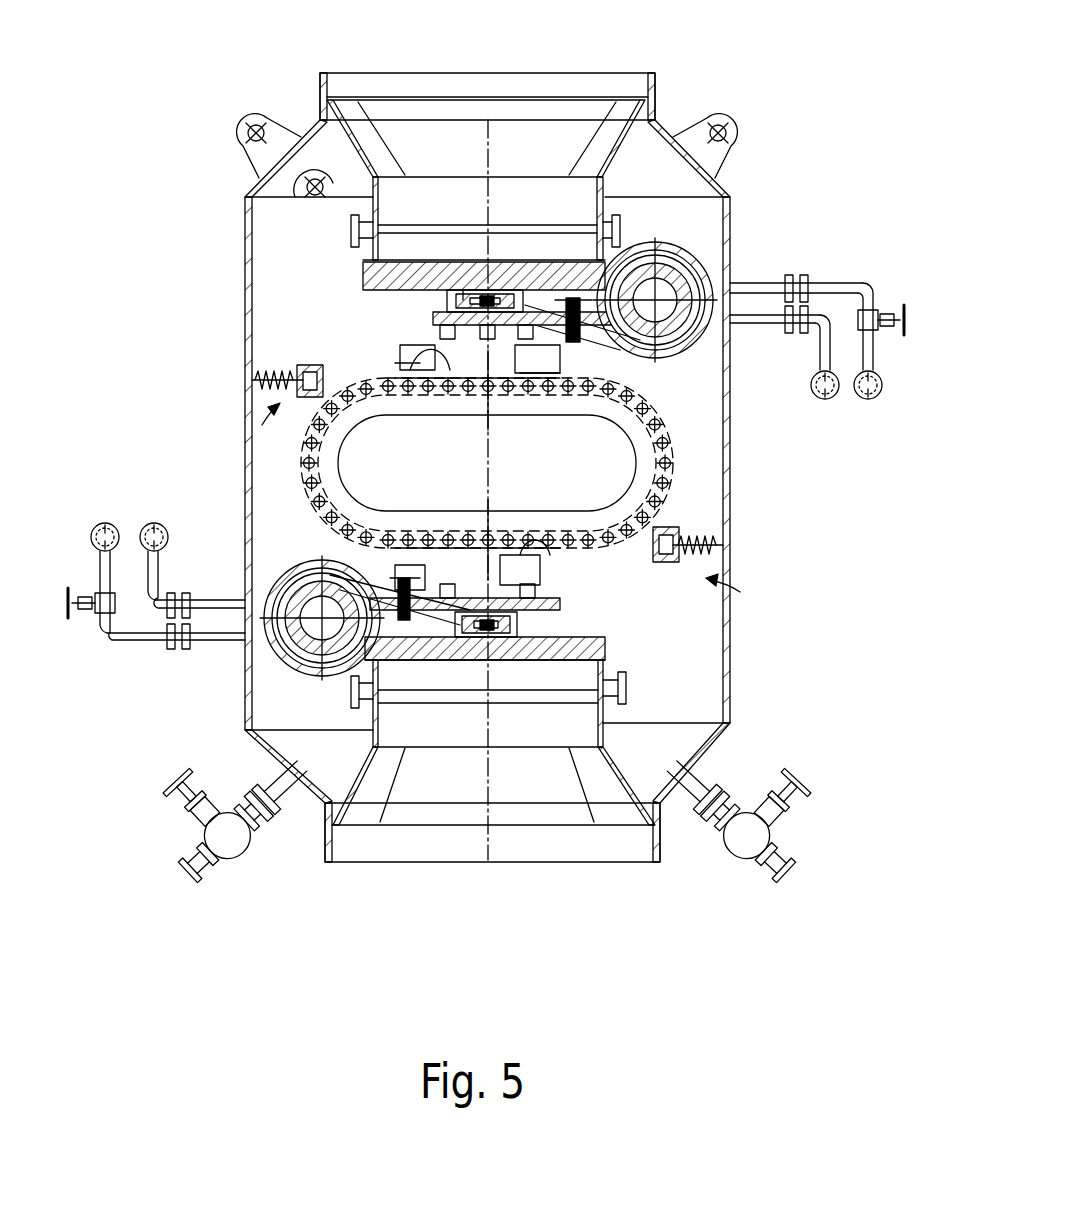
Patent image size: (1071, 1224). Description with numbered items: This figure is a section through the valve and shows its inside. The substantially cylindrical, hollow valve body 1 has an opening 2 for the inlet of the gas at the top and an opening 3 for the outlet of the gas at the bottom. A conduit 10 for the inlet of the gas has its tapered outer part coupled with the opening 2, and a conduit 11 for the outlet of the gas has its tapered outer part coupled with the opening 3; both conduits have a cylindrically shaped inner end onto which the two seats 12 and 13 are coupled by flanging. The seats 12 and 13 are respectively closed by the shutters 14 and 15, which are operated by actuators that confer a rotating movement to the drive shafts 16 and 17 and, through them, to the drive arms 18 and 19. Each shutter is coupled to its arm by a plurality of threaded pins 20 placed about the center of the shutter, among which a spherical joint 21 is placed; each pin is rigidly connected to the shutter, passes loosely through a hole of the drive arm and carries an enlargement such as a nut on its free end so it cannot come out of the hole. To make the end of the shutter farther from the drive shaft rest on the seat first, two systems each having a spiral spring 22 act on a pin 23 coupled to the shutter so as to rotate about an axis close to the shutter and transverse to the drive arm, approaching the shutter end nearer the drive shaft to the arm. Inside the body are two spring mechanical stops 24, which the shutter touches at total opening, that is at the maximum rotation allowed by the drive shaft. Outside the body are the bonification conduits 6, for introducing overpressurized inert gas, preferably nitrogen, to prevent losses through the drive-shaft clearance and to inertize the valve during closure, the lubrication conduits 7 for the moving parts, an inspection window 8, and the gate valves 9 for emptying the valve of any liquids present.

The valve body 1 is at (736, 170).
The opening for the inlet of the gas 2 is at (582, 73).
The opening for the outlet of the gas 3 is at (545, 862).
The bonification conduits 6 is at (152, 565).
The lubrication conduits 7 is at (103, 588).
The inspection window 8 is at (610, 455).
The gate valves 9 is at (248, 845).
The conduit for the inlet of the gas 10 is at (352, 97).
The conduit for the outlet of the gas 11 is at (355, 790).
The seat 12 is at (363, 262).
The seat 13 is at (358, 690).
The shutter 14 is at (365, 283).
The shutter 15 is at (610, 652).
The drive shaft 16 is at (660, 298).
The drive shaft 17 is at (322, 618).
The drive arm 18 is at (437, 331).
The drive arm 19 is at (520, 582).
The threaded pins 20 is at (522, 290).
The spherical joint 21 is at (462, 290).
The spiral spring 22 is at (400, 590).
The pin 23 is at (378, 598).
The spring mechanical stops 24 is at (297, 380).